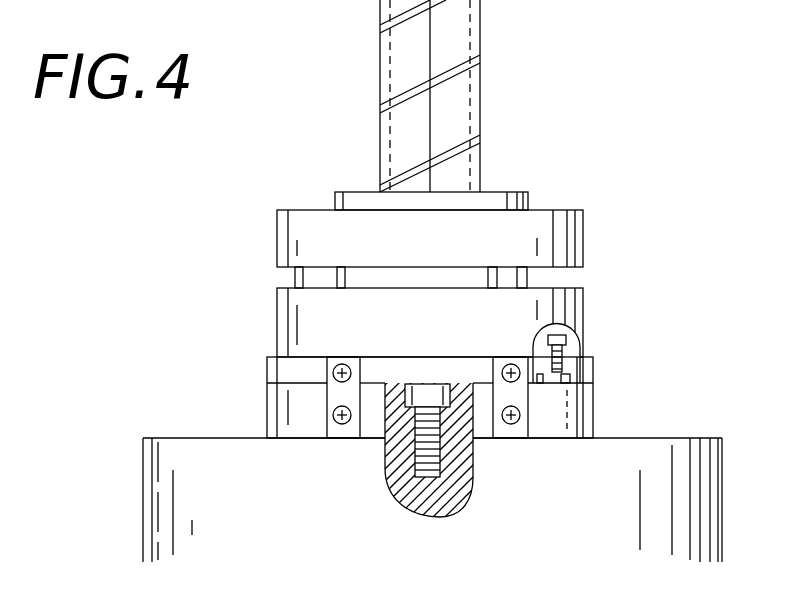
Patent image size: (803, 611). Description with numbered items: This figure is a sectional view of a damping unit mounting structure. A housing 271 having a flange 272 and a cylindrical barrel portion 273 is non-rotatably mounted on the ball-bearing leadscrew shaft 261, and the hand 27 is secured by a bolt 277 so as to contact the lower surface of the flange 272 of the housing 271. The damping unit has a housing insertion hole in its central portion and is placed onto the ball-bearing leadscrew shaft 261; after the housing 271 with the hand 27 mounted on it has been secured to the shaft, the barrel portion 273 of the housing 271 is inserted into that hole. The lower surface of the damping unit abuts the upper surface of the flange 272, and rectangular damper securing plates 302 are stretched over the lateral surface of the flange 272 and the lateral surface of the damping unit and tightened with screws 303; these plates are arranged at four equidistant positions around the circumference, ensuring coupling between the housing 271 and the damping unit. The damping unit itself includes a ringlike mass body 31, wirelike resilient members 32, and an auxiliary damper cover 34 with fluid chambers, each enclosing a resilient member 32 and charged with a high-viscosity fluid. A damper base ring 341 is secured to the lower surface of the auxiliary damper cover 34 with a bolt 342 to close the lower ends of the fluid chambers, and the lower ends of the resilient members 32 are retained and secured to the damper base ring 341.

The ball-bearing leadscrew shaft 261 is at (465, 85).
The housing 271 is at (347, 192).
The ringlike mass body 31 is at (570, 210).
The wirelike resilient members 32 is at (500, 278).
The cylindrical barrel portion 273 is at (330, 272).
The auxiliary damper cover 34 is at (583, 305).
The bolt 342 is at (567, 350).
The damper base ring 341 is at (588, 372).
The flange 272 is at (275, 398).
The damper securing plates 302 is at (520, 407).
The screws 303 is at (511, 425).
The hand 27 is at (177, 442).
The bolt 277 is at (394, 501).